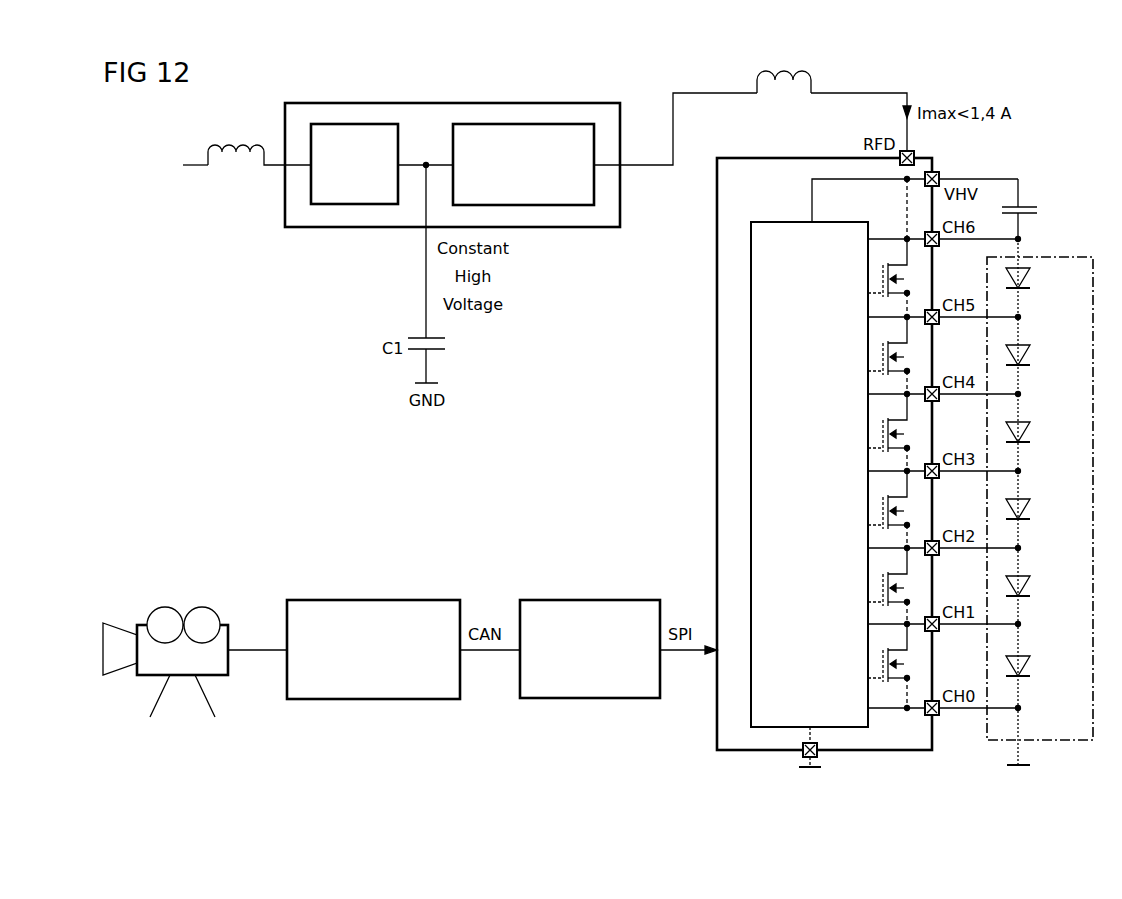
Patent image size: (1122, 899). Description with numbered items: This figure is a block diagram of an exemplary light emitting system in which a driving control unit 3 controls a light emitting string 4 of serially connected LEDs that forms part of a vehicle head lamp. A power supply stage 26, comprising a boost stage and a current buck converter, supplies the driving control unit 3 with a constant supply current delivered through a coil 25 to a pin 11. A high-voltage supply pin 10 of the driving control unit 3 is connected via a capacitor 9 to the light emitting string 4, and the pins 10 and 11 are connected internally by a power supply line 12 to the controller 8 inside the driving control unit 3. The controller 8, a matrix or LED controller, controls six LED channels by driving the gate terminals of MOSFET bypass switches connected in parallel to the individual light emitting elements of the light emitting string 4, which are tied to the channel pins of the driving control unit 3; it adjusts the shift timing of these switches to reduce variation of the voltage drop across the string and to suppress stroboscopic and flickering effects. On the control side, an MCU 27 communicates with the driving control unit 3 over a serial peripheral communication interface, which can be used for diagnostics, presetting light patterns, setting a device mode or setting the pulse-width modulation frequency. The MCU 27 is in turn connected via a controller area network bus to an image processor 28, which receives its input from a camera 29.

The power supply with boost and current buck converter 26 is at (453, 103).
The coil 25 is at (784, 86).
The power supply line 12 is at (829, 179).
The controller 8 is at (780, 222).
The pin 11 is at (915, 167).
The high-voltage supply pin 10 is at (944, 182).
The capacitor 9 is at (1023, 205).
The light emitting string 4 is at (1075, 257).
The driving control unit 3 is at (717, 455).
The camera 29 is at (200, 606).
The image processor 28 is at (375, 600).
The MCU 27 is at (592, 600).